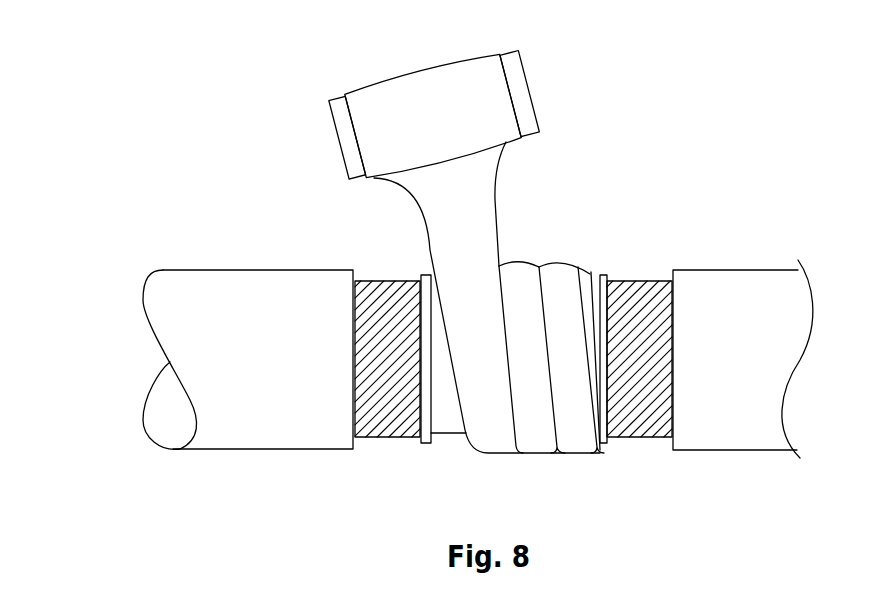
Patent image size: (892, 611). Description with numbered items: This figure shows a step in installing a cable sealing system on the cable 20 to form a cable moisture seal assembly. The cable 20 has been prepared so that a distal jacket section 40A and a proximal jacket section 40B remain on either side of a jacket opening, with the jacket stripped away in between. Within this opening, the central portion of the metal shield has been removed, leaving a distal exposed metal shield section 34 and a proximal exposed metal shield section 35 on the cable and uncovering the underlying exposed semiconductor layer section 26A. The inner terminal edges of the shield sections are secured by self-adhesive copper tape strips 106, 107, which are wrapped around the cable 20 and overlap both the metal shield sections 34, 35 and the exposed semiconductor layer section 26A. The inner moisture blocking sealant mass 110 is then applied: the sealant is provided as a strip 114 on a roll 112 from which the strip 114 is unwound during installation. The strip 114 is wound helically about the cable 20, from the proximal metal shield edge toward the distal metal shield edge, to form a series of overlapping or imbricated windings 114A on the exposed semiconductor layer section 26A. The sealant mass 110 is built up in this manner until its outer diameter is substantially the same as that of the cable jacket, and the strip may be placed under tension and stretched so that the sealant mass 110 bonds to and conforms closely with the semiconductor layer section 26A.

The cable 20 is at (131, 231).
The exposed semiconductor layer section 26A is at (450, 433).
The distal exposed metal shield section 34 is at (400, 433).
The proximal exposed metal shield section 35 is at (648, 428).
The distal jacket section 40A is at (282, 437).
The proximal jacket section 40B is at (735, 438).
The self-adhesive copper tape strip 106 is at (426, 445).
The self-adhesive copper tape strip 107 is at (605, 444).
The inner moisture blocking sealant mass 110 is at (498, 455).
The roll 112 is at (337, 140).
The strip 114 is at (424, 204).
The windings 114A is at (515, 270).